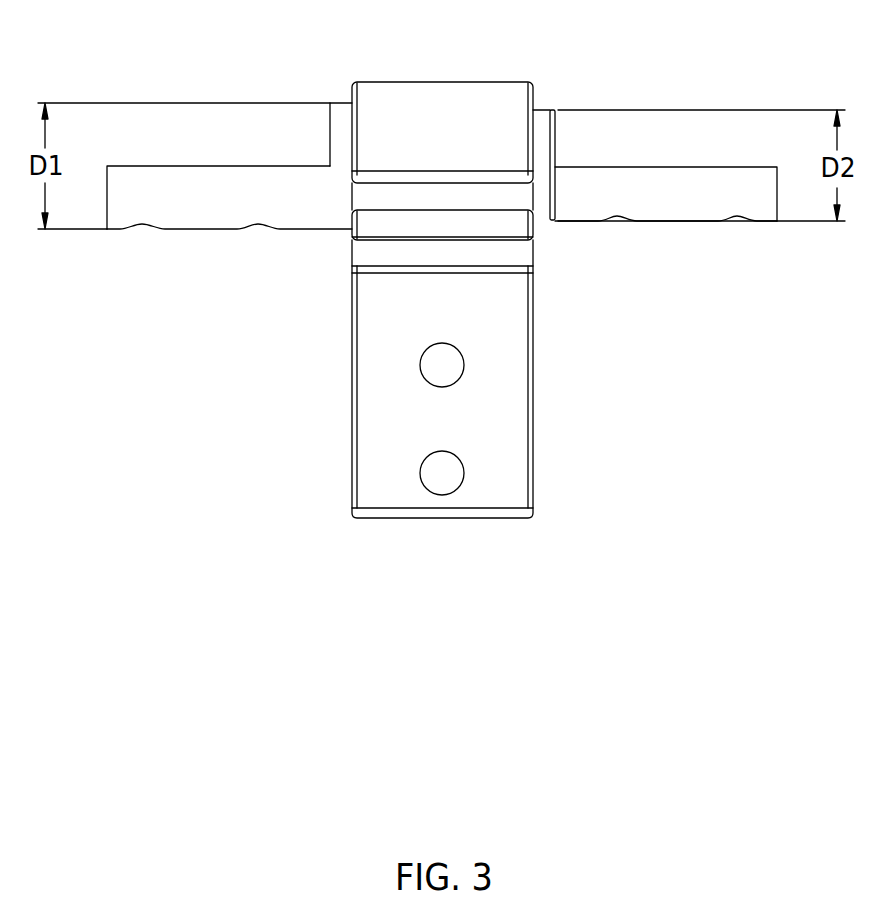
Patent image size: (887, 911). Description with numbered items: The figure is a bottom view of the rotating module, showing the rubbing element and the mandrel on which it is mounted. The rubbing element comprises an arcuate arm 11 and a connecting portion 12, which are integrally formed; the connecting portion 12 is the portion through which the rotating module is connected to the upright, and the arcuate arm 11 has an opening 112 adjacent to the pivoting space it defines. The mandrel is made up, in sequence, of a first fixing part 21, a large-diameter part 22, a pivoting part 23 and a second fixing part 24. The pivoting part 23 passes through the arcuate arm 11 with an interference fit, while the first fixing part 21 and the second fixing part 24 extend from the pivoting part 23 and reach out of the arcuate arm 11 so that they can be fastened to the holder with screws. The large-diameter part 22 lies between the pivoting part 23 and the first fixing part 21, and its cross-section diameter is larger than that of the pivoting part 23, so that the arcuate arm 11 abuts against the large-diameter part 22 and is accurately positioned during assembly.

The arcuate arm 11 is at (431, 100).
The opening 112 is at (513, 198).
The connecting portion 12 is at (507, 387).
The first fixing part 21 is at (198, 180).
The large-diameter part 22 is at (342, 110).
The pivoting part 23 is at (535, 110).
The second fixing part 24 is at (658, 180).